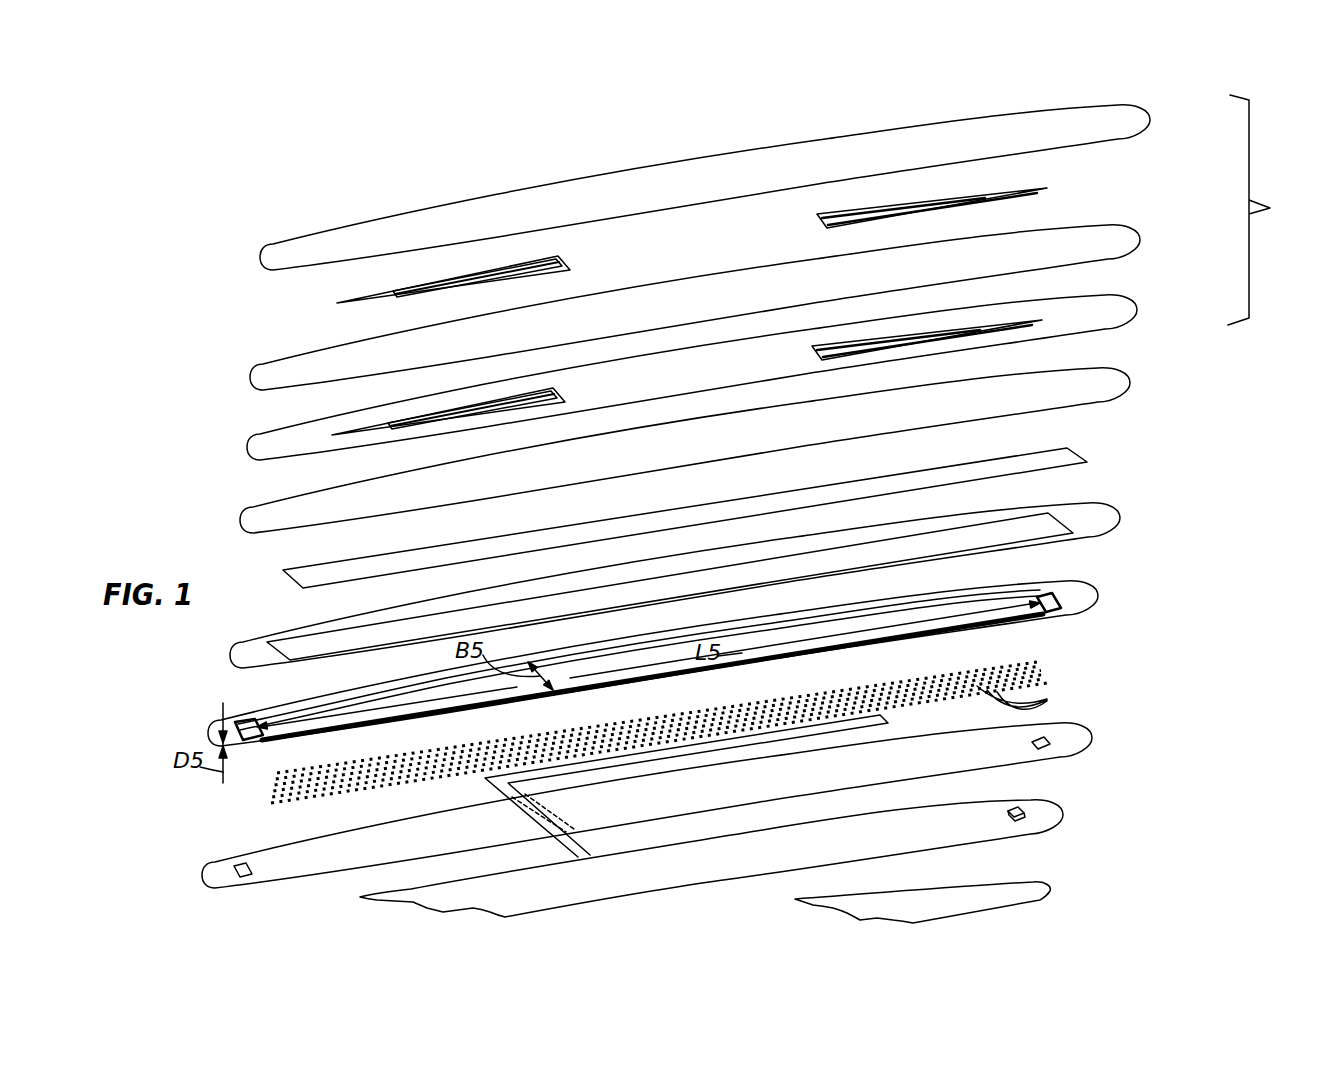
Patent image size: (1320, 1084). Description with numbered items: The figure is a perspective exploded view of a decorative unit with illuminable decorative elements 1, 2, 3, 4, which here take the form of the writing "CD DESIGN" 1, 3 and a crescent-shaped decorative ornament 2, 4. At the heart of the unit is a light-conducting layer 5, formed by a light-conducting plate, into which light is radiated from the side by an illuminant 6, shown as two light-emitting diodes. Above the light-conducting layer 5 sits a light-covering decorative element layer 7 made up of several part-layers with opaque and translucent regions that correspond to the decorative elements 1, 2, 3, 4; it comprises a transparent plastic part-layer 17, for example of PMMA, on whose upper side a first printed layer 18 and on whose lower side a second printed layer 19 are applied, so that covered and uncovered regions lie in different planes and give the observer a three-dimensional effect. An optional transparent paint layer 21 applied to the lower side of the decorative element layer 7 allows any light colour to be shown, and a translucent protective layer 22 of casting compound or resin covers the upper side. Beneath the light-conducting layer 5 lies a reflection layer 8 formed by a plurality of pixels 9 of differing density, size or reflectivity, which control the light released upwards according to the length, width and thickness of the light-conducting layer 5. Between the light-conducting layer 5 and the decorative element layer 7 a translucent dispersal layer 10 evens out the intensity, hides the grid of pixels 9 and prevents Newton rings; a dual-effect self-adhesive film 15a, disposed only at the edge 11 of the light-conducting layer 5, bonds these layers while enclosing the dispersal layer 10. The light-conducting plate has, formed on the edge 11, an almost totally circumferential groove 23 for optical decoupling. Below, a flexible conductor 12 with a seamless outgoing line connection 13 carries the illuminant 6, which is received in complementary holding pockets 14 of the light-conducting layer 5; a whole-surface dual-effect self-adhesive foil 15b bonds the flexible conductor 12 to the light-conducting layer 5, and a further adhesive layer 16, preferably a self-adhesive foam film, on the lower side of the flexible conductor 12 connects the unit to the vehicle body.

The illuminable decorative element 1 is at (777, 243).
The crescent-shaped decorative ornament 2 is at (886, 222).
The illuminable decorative element 3 is at (775, 374).
The crescent-shaped decorative ornament 4 is at (885, 354).
The light-conducting layer 5 is at (1090, 598).
The illuminant 6 is at (1016, 810).
The light-covering decorative element layer 7 is at (1259, 210).
The reflection layer 8 is at (1040, 672).
The pixels 9 is at (1021, 699).
The translucent dispersal layer 10 is at (1062, 456).
The edge 11 is at (967, 590).
The flexible conductor 12 is at (1063, 814).
The outgoing line connection 13 is at (890, 720).
The holding pockets 14 is at (253, 719).
The dual-effect self-adhesive film 15a is at (1103, 516).
The dual-effect self-adhesive foil 15b is at (1093, 740).
The adhesive layer 16 is at (1035, 886).
The transparent plastic part-layer 17 is at (1118, 236).
The first printed layer 18 is at (1047, 186).
The second printed layer 19 is at (1118, 310).
The transparent paint layer 21 is at (1133, 378).
The translucent protective layer 22 is at (1150, 122).
The circumferential groove 23 is at (1043, 613).